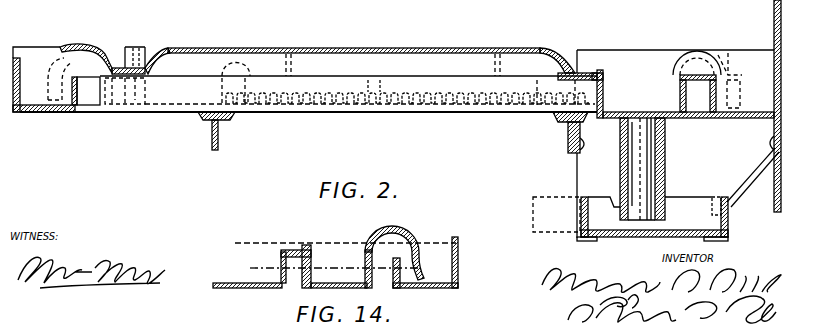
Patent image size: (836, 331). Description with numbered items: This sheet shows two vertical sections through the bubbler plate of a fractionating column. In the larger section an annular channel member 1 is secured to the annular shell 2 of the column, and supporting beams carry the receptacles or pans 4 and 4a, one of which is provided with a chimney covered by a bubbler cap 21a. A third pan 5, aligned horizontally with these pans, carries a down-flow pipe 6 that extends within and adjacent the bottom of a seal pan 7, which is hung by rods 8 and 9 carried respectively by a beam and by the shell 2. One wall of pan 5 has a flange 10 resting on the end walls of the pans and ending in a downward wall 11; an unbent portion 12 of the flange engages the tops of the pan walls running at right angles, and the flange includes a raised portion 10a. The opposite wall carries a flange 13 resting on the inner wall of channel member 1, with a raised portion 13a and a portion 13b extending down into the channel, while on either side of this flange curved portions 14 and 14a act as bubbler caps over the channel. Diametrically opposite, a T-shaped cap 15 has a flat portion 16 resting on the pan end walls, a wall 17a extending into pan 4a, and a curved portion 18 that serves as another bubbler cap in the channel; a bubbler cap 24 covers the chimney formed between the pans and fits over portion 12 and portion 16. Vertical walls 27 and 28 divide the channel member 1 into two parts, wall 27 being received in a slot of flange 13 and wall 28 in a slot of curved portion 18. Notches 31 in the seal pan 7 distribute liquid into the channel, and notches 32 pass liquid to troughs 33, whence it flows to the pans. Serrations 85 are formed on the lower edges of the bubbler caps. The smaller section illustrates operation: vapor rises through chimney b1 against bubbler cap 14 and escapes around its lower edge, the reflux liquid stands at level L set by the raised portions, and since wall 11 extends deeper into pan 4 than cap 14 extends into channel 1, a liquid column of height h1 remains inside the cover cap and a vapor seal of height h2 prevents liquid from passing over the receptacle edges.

In FIG. 2, the annular channel member 1 is at (738, 119).
In FIG. 14, the annular channel member 1 is at (459, 270).
In FIG. 2, the annular shell 2 is at (774, 22).
In FIG. 14, the pan 4 is at (231, 283).
In FIG. 2, the pan 4a is at (420, 92).
In FIG. 2, the third pan 5 is at (605, 80).
In FIG. 14, the third pan 5 is at (334, 283).
In FIG. 2, the down-flow pipe 6 is at (665, 168).
In FIG. 2, the seal pan 7 is at (672, 230).
In FIG. 2, the rod 8 is at (576, 170).
In FIG. 2, the rod 9 is at (742, 193).
In FIG. 14, the flange 10 is at (290, 250).
In FIG. 2, the raised portion 10a is at (600, 72).
In FIG. 14, the raised portion 10a is at (312, 246).
In FIG. 14, the wall 11 is at (280, 250).
In FIG. 2, the portion of flange 12 is at (577, 72).
In FIG. 2, the flange 13 is at (697, 113).
In FIG. 2, the raised portion 13a is at (745, 55).
In FIG. 2, the portion of flange 13b is at (748, 94).
In FIG. 14, the curved portion 14 is at (386, 232).
In FIG. 2, the curved portion 14a is at (697, 53).
In FIG. 2, the T-shaped cap 15 is at (91, 43).
In FIG. 2, the flat horizontally extending portion 16 is at (118, 67).
In FIG. 2, the wall 17a is at (120, 108).
In FIG. 2, the curved portion 18 is at (63, 57).
In FIG. 2, the bubbler cap 21a is at (236, 40).
In FIG. 2, the bubbler cap 24 is at (428, 47).
In FIG. 2, the vertical wall 27 is at (728, 53).
In FIG. 2, the vertical wall 28 is at (28, 46).
In FIG. 2, the notch 31 is at (718, 197).
In FIG. 2, the notch 32 is at (615, 205).
In FIG. 2, the trough 33 is at (541, 209).
In FIG. 2, the notches or serrations 85 is at (379, 80).
In FIG. 14, the liquid level L is at (300, 250).
In FIG. 14, the chimney b1 is at (385, 280).
In FIG. 14, the height of liquid column h1 is at (271, 268).
In FIG. 14, the height of vapor seal h2 is at (268, 268).